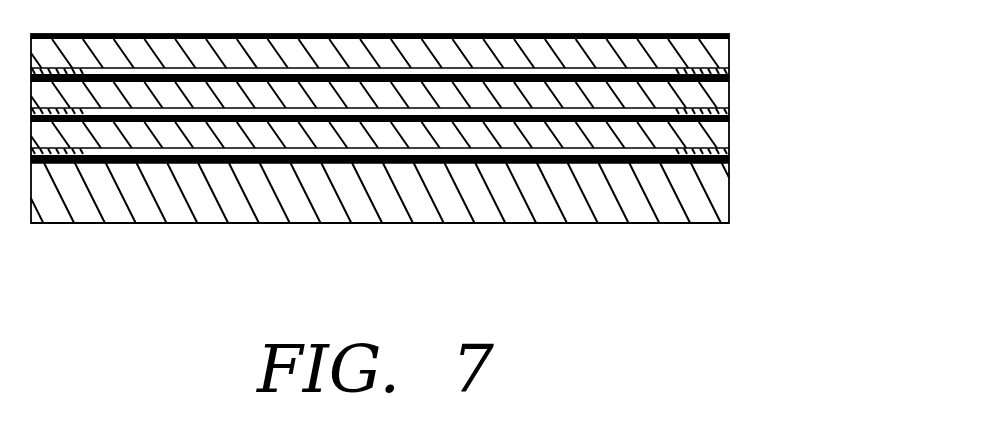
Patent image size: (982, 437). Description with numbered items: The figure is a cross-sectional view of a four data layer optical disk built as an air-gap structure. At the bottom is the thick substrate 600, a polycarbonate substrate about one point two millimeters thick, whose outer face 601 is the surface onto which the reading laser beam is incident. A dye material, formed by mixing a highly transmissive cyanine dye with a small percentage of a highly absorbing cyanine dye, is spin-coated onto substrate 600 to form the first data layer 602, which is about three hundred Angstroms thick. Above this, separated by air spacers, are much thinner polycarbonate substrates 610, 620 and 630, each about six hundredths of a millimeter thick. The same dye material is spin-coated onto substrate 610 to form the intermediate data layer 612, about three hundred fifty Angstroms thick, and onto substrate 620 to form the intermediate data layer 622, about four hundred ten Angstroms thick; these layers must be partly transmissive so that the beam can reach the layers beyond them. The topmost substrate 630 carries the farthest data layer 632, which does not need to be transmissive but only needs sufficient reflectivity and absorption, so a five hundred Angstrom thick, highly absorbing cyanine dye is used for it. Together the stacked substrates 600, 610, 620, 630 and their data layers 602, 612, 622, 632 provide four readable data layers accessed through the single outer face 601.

The substrate 600 is at (685, 202).
The outer face 601 is at (552, 223).
The first data layer 602 is at (735, 165).
The substrate 610 is at (730, 160).
The intermediate data layer 612 is at (718, 135).
The substrate 620 is at (717, 95).
The intermediate data layer 622 is at (729, 80).
The substrate 630 is at (710, 55).
The farthest data layer 632 is at (727, 37).